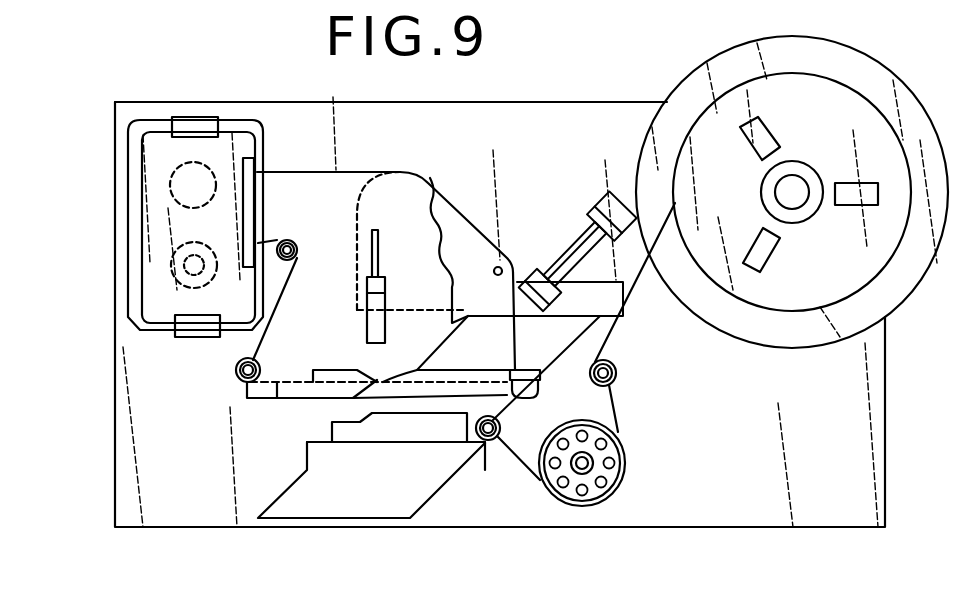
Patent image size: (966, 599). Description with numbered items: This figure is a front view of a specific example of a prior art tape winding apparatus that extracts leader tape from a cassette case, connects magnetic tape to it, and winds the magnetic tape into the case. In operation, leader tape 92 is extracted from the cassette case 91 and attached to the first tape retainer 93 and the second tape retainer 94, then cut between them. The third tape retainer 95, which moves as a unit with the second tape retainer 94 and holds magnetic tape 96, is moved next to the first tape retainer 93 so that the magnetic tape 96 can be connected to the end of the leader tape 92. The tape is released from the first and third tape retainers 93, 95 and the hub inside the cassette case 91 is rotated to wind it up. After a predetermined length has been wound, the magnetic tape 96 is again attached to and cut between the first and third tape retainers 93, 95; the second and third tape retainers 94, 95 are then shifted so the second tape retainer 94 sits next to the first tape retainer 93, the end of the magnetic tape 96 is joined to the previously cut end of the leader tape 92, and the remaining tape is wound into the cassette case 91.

The cassette case 91 is at (145, 248).
The leader tape 92 is at (297, 172).
The first tape retainer 93 is at (298, 393).
The second tape retainer 94 is at (537, 395).
The third tape retainer 95 is at (390, 433).
The magnetic tape 96 is at (634, 288).